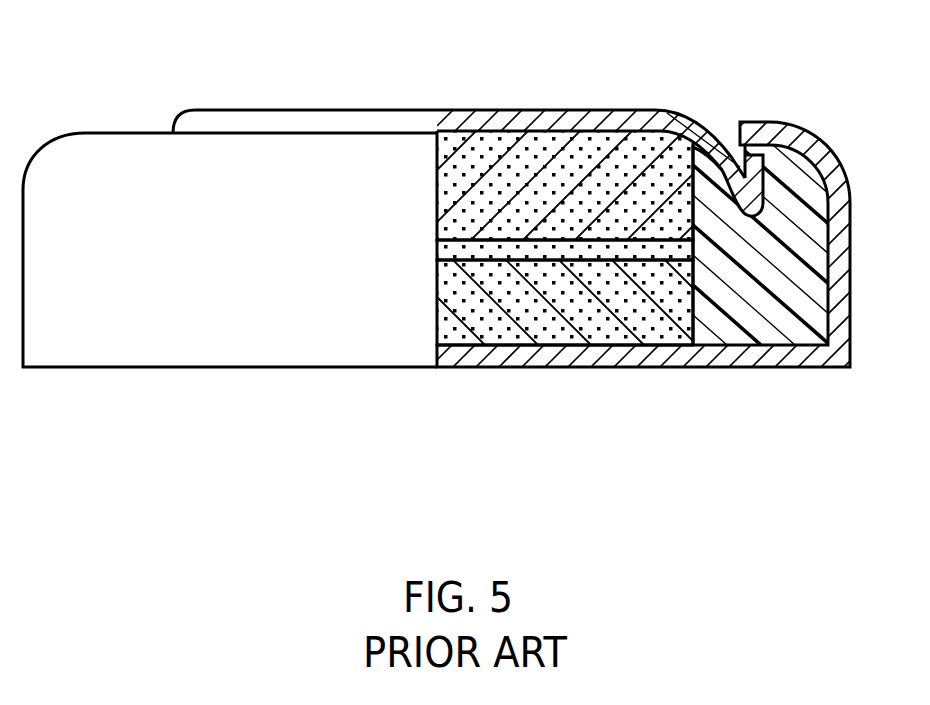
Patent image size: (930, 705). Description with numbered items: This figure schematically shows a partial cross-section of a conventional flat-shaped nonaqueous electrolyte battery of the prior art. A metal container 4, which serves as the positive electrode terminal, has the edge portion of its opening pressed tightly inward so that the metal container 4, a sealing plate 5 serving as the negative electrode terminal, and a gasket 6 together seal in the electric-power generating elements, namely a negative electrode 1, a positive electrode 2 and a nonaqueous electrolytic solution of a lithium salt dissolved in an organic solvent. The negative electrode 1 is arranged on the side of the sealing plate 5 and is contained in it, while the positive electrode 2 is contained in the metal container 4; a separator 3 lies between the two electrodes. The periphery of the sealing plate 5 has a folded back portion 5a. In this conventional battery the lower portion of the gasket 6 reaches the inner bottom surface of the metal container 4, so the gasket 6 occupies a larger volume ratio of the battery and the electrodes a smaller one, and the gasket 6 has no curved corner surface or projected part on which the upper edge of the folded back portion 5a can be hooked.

The negative electrode 1 is at (578, 157).
The positive electrode 2 is at (516, 328).
The separator 3 is at (648, 250).
The metal container 4 is at (612, 358).
The sealing plate 5 is at (492, 110).
The folded back portion 5a is at (741, 126).
The gasket 6 is at (793, 165).